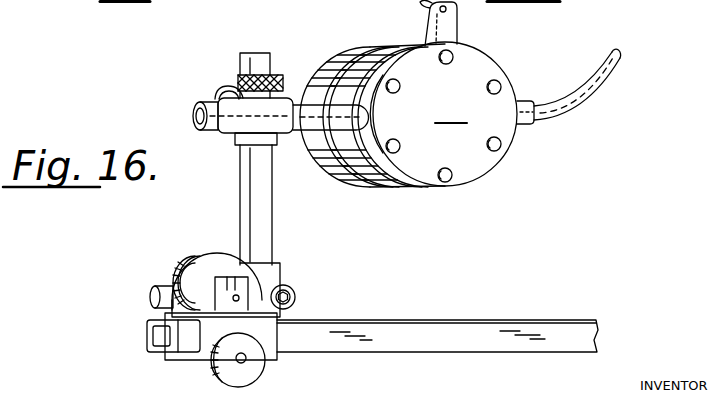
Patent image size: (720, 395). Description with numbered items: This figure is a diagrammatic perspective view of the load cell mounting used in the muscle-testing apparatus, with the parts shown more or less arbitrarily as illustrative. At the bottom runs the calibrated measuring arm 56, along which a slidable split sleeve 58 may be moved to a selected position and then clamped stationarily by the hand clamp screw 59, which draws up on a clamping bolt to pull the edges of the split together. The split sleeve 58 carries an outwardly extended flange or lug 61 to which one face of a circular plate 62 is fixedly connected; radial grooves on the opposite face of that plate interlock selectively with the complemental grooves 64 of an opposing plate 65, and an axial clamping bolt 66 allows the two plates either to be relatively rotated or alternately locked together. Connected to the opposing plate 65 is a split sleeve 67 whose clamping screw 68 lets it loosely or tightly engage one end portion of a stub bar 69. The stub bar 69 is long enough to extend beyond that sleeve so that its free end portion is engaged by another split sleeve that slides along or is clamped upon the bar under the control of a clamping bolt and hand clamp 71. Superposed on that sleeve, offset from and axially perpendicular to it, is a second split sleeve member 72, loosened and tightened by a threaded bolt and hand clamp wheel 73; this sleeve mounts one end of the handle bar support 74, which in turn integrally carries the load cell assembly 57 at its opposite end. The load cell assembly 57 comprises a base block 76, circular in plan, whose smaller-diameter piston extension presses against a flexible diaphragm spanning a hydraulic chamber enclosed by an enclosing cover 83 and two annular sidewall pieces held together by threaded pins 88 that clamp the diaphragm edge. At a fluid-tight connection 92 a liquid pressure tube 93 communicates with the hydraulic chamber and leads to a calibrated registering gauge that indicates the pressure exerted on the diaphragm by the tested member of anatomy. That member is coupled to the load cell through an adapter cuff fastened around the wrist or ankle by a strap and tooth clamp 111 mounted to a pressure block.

The calibrated measuring arm 56 is at (443, 327).
The load cell assembly 57 is at (474, 170).
The split sleeve 58 is at (207, 342).
The hand clamp screw 59 is at (252, 374).
The flange or lug 61 is at (238, 303).
The circular plate 62 is at (220, 260).
The complemental grooves 64 is at (184, 270).
The opposing plate 65 is at (182, 264).
The axial clamping bolt 66 is at (150, 295).
The split sleeve 67 is at (272, 267).
The clamping screw 68 is at (295, 296).
The stub bar 69 is at (265, 203).
The clamping bolt and hand clamp 71 is at (230, 92).
The second split sleeve member 72 is at (230, 131).
The threaded bolt and hand clamp wheel 73 is at (273, 82).
The handle bar support 74 is at (318, 112).
The base block 76 is at (363, 186).
The enclosing cover 83 is at (451, 110).
The threaded pins 88 is at (454, 58).
The fluid-tight connection 92 is at (526, 126).
The liquid pressure tube 93 is at (595, 92).
The strap and tooth clamp 111 is at (328, 158).